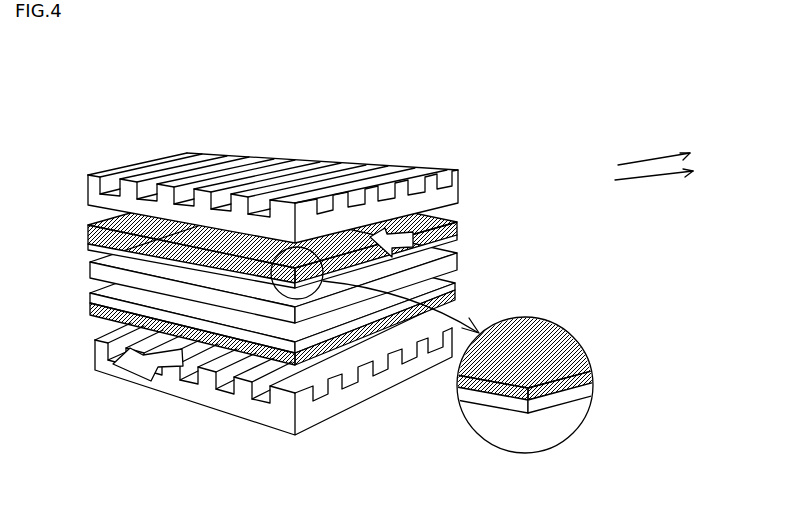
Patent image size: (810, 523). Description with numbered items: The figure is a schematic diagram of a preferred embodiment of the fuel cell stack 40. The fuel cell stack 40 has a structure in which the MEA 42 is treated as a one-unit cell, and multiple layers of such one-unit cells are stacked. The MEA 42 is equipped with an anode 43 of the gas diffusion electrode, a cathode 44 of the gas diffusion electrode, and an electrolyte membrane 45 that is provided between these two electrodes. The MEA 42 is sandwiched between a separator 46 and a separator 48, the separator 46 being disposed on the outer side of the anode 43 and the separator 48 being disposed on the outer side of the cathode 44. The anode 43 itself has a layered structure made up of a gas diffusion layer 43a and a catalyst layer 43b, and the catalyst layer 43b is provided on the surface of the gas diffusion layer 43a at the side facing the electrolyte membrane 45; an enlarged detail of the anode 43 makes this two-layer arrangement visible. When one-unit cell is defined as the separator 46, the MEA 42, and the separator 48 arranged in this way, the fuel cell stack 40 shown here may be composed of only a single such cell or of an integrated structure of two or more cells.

The fuel cell stack 40 is at (530, 88).
The MEA 42 is at (75, 220).
The anode 43 is at (457, 230).
The gas diffusion layer 43a is at (582, 343).
The catalyst layer 43b is at (584, 396).
The cathode 44 is at (458, 293).
The electrolyte membrane 45 is at (460, 262).
The separator 46 is at (462, 180).
The separator 48 is at (257, 415).